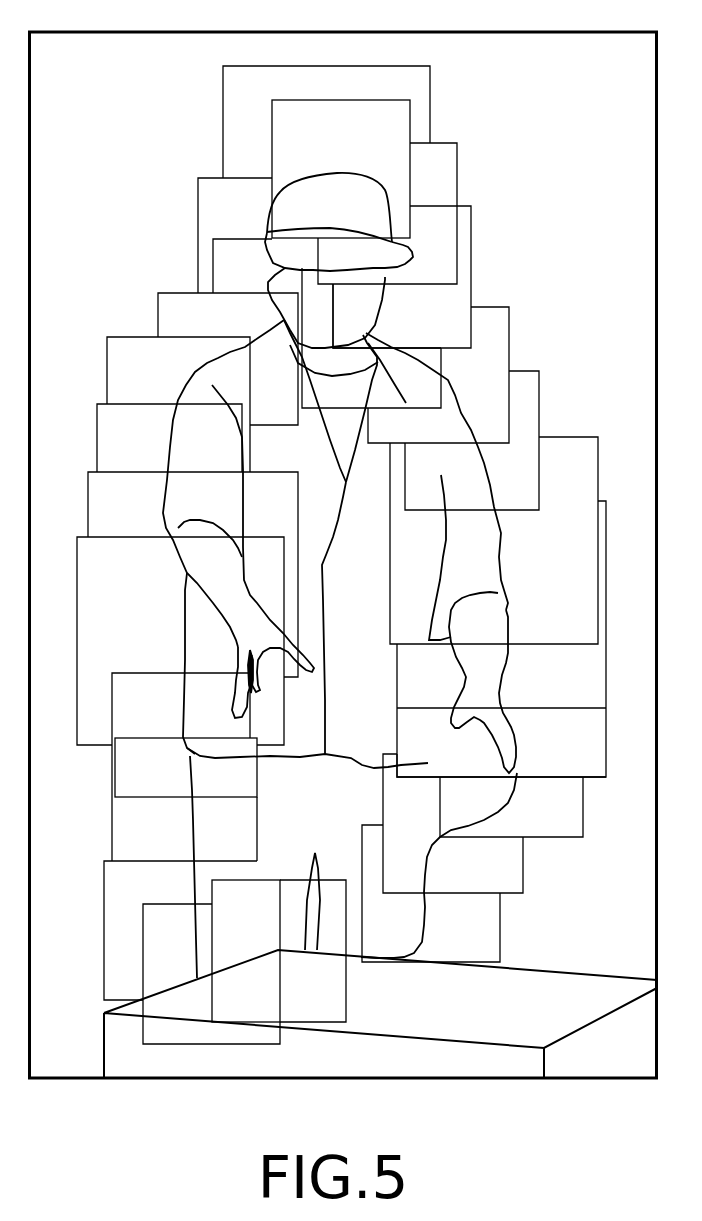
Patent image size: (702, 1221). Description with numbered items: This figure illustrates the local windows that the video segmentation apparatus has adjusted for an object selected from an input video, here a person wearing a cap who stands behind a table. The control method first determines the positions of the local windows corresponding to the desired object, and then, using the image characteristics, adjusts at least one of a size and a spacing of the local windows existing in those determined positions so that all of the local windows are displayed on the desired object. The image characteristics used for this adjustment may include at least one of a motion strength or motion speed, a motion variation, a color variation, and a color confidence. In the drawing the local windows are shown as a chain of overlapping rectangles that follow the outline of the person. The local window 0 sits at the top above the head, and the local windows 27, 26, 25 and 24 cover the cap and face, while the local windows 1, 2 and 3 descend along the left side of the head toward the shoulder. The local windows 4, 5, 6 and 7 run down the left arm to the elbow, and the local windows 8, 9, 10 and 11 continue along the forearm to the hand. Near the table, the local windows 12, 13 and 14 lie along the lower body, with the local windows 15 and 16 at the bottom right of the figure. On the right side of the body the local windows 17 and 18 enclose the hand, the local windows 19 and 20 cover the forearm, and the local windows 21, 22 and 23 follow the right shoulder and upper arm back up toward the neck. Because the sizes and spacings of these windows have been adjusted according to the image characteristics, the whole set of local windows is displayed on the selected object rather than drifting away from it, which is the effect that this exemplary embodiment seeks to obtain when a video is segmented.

The local window 0 is at (326, 110).
The local window 1 is at (234, 222).
The local window 2 is at (242, 254).
The local window 3 is at (228, 343).
The local window 4 is at (178, 392).
The local window 5 is at (169, 426).
The local window 6 is at (193, 561).
The local window 7 is at (180, 627).
The local window 8 is at (181, 722).
The local window 9 is at (186, 753).
The local window 10 is at (184, 814).
The local window 11 is at (180, 917).
The local window 12 is at (211, 960).
The local window 13 is at (246, 939).
The local window 14 is at (312, 937).
The local window 15 is at (425, 893).
The local window 16 is at (440, 823).
The local window 17 is at (500, 753).
The local window 18 is at (501, 759).
The local window 19 is at (501, 639).
The local window 20 is at (494, 540).
The local window 21 is at (468, 440).
The local window 22 is at (438, 375).
The local window 23 is at (387, 316).
The local window 24 is at (371, 325).
The local window 25 is at (402, 269).
The local window 26 is at (387, 204).
The local window 27 is at (341, 155).